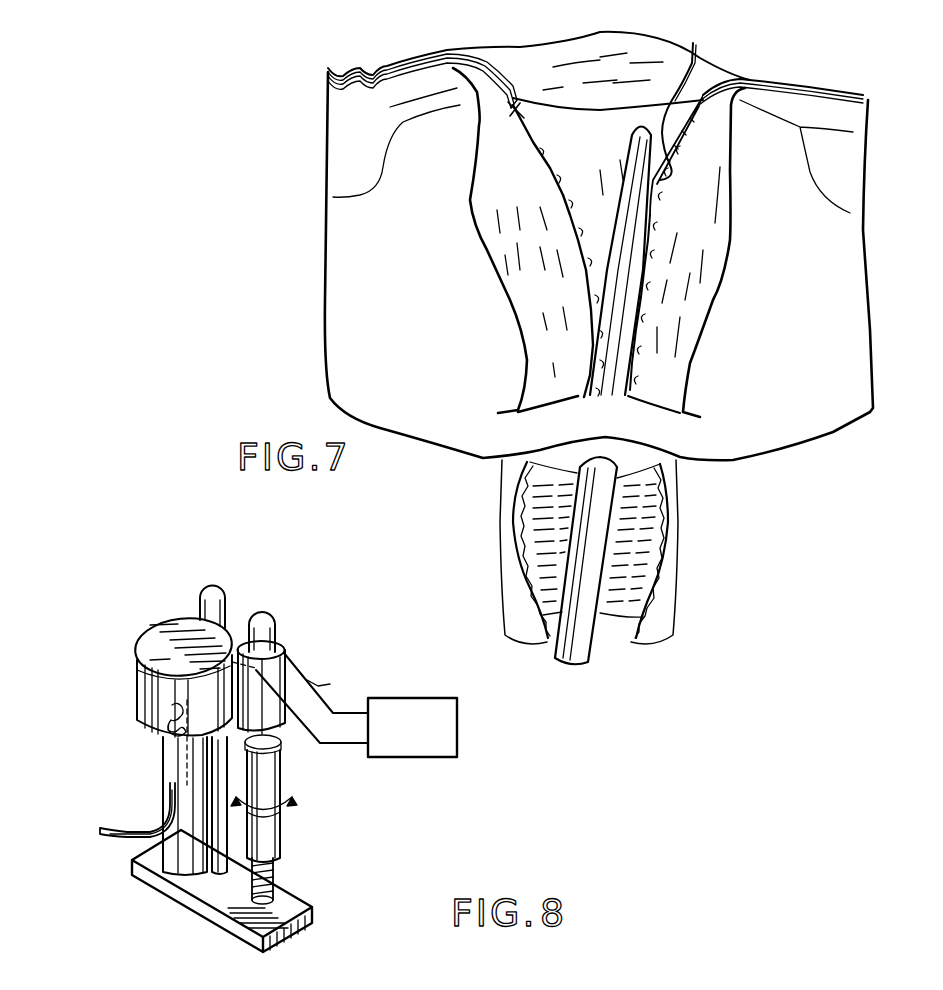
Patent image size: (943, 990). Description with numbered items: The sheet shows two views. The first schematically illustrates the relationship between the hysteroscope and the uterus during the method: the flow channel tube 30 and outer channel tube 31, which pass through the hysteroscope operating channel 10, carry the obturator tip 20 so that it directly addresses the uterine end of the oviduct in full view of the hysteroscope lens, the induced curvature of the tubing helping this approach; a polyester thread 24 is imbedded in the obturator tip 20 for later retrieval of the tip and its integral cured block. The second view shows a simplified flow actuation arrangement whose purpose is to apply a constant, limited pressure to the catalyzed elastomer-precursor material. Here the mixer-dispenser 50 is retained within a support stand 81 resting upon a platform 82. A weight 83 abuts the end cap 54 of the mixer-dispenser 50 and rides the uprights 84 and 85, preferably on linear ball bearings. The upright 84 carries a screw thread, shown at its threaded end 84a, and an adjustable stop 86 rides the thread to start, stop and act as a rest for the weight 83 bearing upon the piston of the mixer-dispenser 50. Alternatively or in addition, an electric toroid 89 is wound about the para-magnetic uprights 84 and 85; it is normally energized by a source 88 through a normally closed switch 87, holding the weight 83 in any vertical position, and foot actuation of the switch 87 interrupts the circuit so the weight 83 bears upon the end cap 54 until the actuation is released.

In FIG. 7, the operating channel 10 is at (622, 187).
In FIG. 7, the obturator tip 20 is at (517, 100).
In FIG. 7, the polyester thread 24 is at (520, 118).
In FIG. 7, the flow channel tube 30 is at (703, 56).
In FIG. 8, the flow channel tube 30 is at (116, 827).
In FIG. 7, the outer channel tube 31 is at (668, 96).
In FIG. 8, the outer channel tube 31 is at (107, 835).
In FIG. 8, the mixer-dispenser 50 is at (173, 760).
In FIG. 8, the end cap 54 is at (167, 705).
In FIG. 8, the support stand 81 is at (177, 873).
In FIG. 8, the platform 82 is at (217, 890).
In FIG. 8, the weight 83 is at (137, 658).
In FIG. 8, the upright 84 is at (277, 632).
In FIG. 8, the threaded end of post 84a is at (272, 882).
In FIG. 8, the upright 85 is at (226, 600).
In FIG. 8, the adjustable stop 86 is at (270, 832).
In FIG. 8, the switch 87 is at (318, 685).
In FIG. 8, the source 88 is at (427, 698).
In FIG. 8, the electric toroid 89 is at (285, 652).